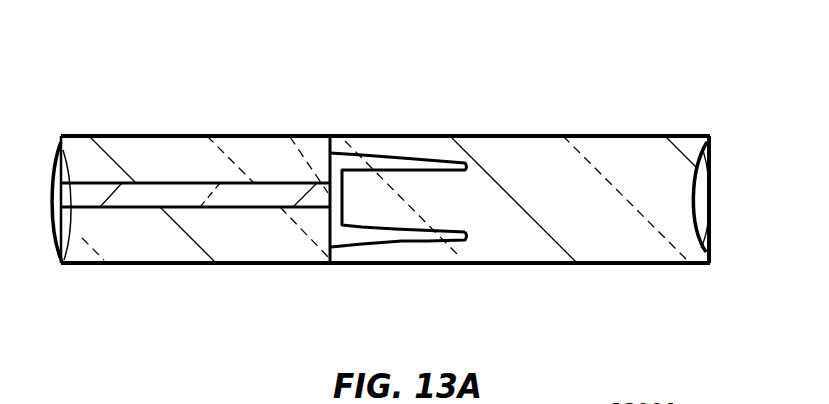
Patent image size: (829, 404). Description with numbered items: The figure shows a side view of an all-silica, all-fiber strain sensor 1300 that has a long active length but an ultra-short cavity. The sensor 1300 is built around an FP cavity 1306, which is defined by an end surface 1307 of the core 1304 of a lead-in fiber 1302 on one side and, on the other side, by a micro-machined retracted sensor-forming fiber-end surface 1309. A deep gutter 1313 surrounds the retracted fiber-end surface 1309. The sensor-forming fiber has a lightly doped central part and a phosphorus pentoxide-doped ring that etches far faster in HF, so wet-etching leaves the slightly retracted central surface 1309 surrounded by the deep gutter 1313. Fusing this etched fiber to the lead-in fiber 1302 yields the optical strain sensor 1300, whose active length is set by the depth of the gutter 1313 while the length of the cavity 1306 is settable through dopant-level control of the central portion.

The sensor 1300 is at (579, 86).
The lead-in fiber 1302 is at (160, 152).
The core 1304 is at (177, 207).
The FP cavity 1306 is at (330, 198).
The end surface 1307 is at (291, 136).
The retracted sensor-forming fiber-end surface 1309 is at (345, 198).
The deep gutter 1313 is at (400, 240).